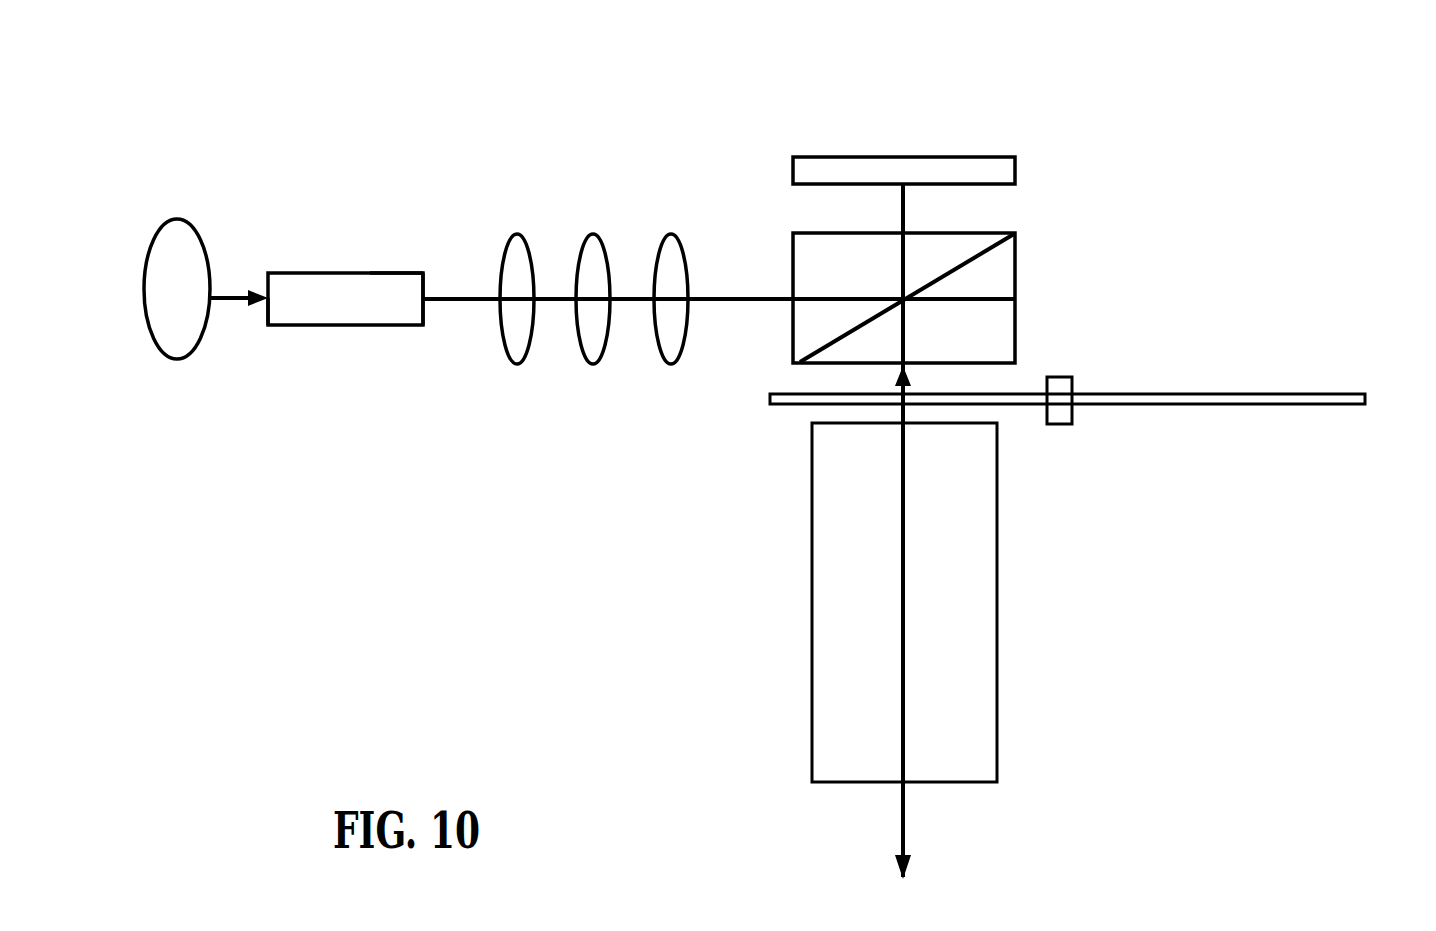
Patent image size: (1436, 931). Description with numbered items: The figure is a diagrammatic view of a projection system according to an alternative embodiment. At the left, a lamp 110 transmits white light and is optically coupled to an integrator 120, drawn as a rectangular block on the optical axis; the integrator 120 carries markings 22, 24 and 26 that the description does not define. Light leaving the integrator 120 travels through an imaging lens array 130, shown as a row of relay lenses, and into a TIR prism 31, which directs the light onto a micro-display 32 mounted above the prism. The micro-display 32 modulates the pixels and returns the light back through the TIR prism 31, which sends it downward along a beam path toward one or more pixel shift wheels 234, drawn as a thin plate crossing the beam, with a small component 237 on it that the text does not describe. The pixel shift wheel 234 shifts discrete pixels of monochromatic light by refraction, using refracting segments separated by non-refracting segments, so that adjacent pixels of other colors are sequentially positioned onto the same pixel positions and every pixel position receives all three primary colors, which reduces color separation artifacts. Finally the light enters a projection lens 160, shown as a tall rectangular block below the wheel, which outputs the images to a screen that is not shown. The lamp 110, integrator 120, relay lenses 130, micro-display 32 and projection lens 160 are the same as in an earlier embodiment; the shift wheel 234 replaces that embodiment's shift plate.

The lamp 110 is at (150, 220).
The integrator 120 is at (321, 352).
The input end of module 22 is at (268, 305).
The module housing 26 is at (393, 258).
The output end of module 24 is at (427, 275).
The imaging lens array 130 is at (591, 418).
The TIR prism 31 is at (1030, 299).
The micro-display 32 is at (948, 147).
The pixel shift wheel 234 is at (1360, 430).
The sensor 237 is at (905, 413).
The projection lens 160 is at (1048, 603).